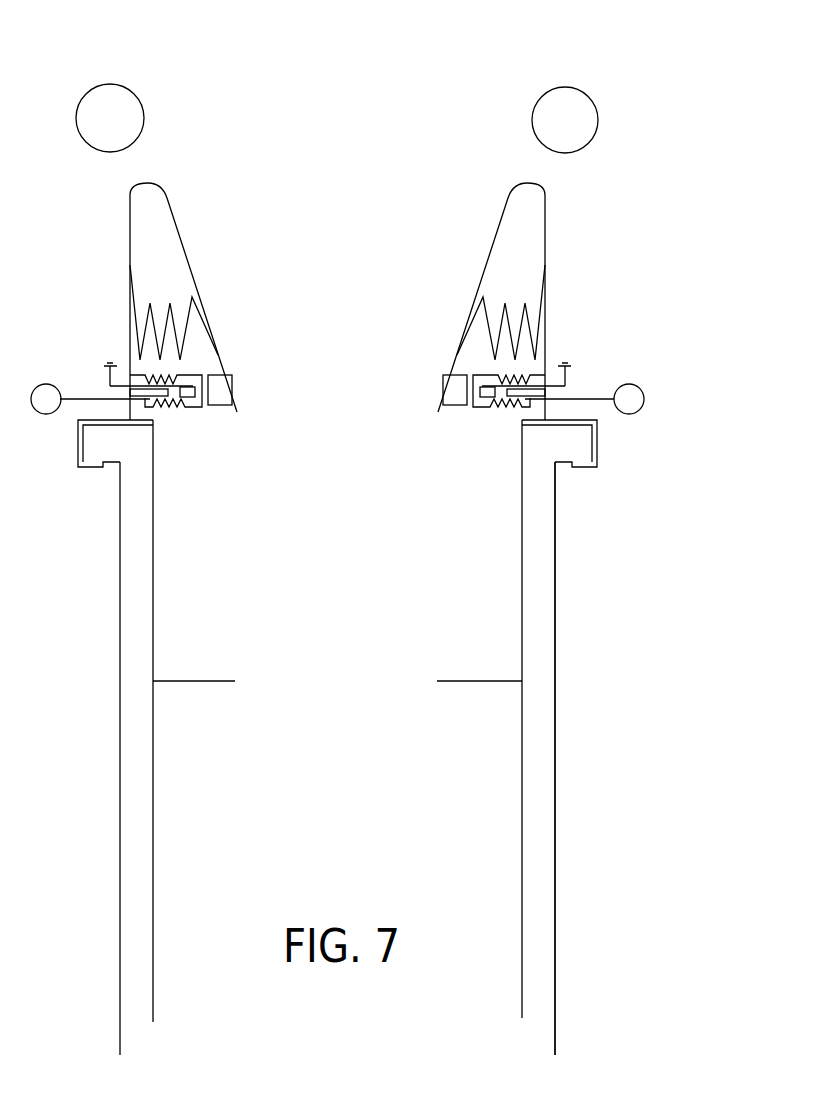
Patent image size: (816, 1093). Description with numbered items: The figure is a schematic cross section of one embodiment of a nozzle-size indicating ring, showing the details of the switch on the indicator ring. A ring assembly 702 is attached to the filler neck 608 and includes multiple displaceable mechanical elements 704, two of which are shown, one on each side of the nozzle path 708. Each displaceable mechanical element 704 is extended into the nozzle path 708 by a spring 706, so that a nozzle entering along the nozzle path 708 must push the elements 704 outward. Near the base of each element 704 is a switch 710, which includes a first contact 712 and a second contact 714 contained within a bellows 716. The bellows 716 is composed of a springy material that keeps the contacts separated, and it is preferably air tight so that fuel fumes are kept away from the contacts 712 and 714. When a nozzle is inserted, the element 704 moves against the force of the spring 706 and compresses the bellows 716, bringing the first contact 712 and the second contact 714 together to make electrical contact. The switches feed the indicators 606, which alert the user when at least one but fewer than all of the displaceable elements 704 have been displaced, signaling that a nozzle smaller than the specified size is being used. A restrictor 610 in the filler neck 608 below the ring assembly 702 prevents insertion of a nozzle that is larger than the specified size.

The indicators 606 is at (132, 88).
The filler neck 608 is at (555, 628).
The restrictor 610 is at (213, 681).
The ring assembly 702 is at (664, 219).
The displaceable mechanical elements 704 is at (185, 237).
The spring 706 is at (170, 303).
The nozzle path 708 is at (360, 99).
The switch 710 is at (199, 436).
The first contact 712 is at (160, 410).
The second contact 714 is at (185, 395).
The bellows 716 is at (174, 378).